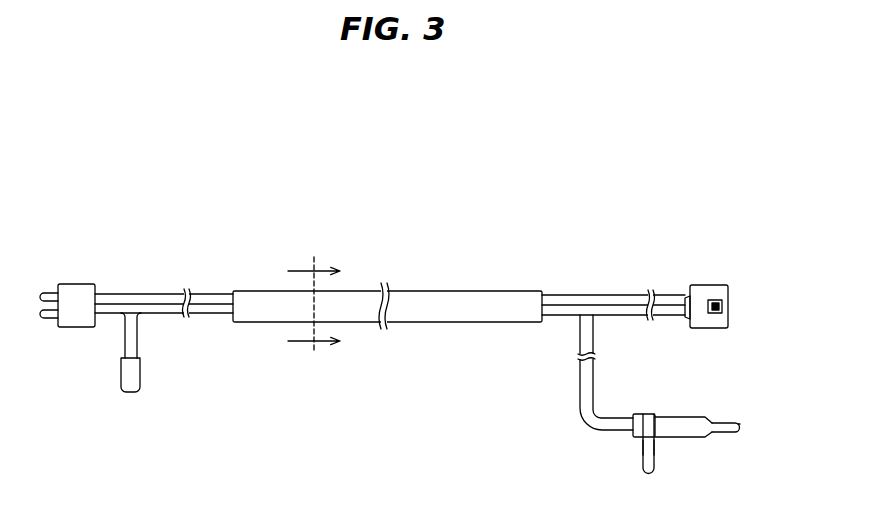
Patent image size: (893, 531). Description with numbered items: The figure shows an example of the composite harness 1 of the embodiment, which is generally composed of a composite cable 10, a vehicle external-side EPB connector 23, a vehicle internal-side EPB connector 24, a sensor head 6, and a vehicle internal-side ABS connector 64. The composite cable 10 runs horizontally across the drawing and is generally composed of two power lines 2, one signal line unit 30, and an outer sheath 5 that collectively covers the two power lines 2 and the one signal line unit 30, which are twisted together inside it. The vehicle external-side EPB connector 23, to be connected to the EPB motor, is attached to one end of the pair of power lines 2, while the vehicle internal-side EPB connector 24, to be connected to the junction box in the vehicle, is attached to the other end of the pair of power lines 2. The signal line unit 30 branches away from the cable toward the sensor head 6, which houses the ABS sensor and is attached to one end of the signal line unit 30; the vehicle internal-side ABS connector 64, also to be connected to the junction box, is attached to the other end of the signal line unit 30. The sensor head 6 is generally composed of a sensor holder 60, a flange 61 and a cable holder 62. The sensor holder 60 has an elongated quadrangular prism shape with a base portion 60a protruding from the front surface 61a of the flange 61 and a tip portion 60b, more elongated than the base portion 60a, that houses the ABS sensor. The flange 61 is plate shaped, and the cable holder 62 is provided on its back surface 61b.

The composite harness 1 is at (700, 194).
The power lines 2 is at (632, 312).
The outer sheath 5 is at (265, 302).
The sensor head 6 is at (743, 408).
The composite cable 10 is at (223, 276).
The vehicle external-side EPB connector 23 is at (708, 293).
The vehicle internal-side EPB connector 24 is at (75, 298).
The signal line unit 30 is at (581, 382).
The sensor holder 60 is at (697, 390).
The base portion 60a is at (673, 425).
The tip portion 60b is at (720, 422).
The flange 61 is at (647, 472).
The front surface 61a is at (654, 453).
The back surface 61b is at (643, 455).
The cable holder 62 is at (637, 416).
The vehicle internal-side ABS connector 64 is at (132, 375).